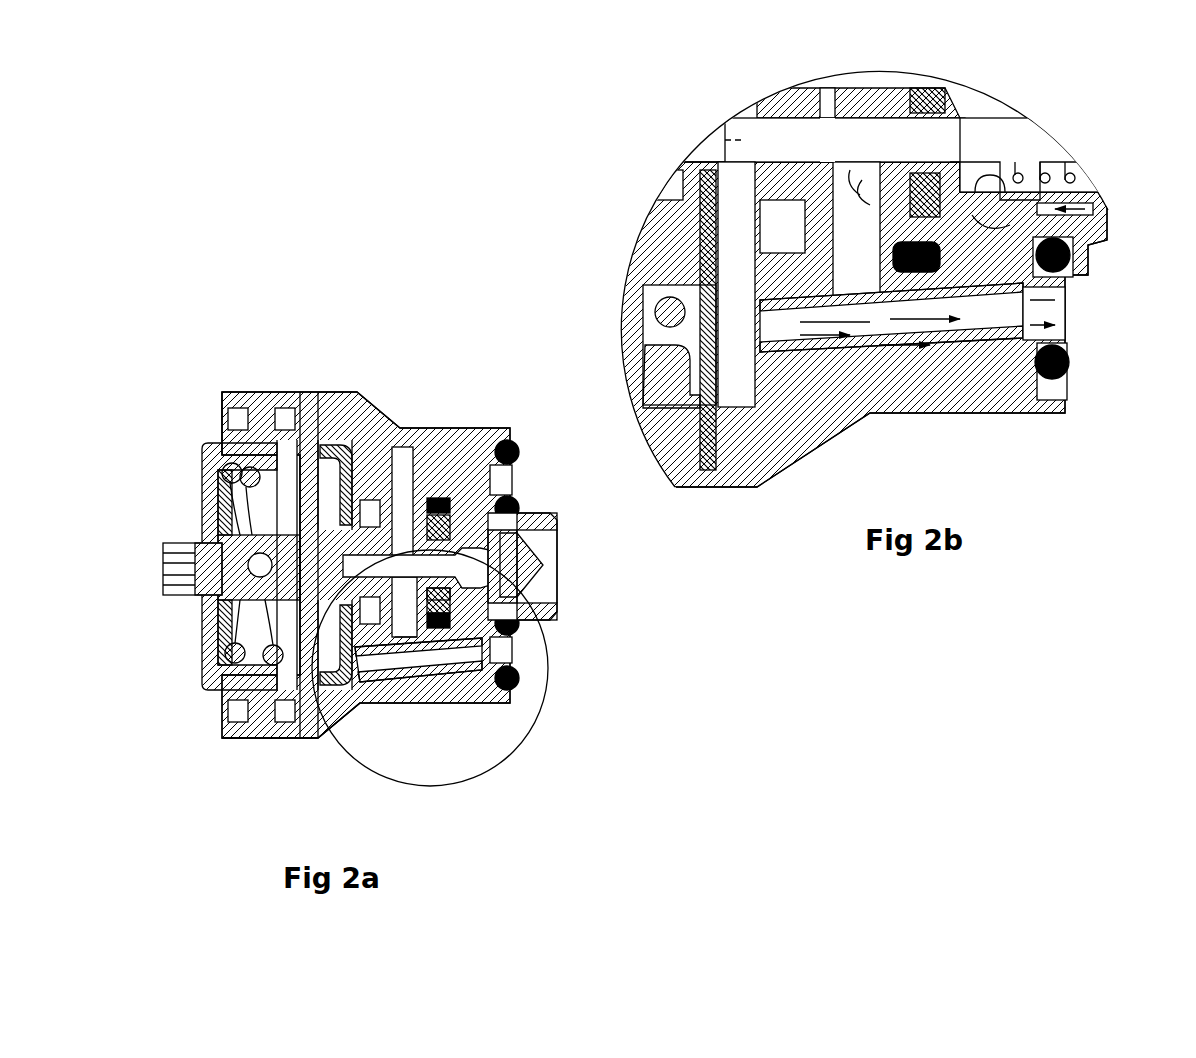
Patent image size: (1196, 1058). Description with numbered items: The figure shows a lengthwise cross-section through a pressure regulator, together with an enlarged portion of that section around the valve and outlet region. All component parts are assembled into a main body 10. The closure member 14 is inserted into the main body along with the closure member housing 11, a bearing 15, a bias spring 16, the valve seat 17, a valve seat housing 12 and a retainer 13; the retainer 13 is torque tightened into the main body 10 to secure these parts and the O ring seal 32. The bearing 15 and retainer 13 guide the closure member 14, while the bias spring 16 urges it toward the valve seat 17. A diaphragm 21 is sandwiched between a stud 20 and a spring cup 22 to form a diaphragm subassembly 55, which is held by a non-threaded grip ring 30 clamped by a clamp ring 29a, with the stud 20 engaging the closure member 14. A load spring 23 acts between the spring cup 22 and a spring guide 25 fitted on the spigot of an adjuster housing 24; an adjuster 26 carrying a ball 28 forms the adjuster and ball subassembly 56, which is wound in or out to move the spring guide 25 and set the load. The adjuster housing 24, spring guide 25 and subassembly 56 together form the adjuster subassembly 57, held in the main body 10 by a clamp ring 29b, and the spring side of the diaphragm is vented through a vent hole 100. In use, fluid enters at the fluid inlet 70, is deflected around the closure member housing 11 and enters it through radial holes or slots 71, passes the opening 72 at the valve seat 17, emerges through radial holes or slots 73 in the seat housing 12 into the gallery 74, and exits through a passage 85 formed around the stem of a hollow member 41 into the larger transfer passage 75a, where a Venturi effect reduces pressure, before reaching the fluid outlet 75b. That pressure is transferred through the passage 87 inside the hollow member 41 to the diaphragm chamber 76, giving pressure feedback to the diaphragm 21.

In FIG. 2a, the main body 10 is at (362, 432).
In FIG. 2a, the closure member housing 11 is at (542, 592).
In FIG. 2b, the closure member housing 11 is at (1087, 187).
In FIG. 2a, the valve seat housing 12 is at (423, 500).
In FIG. 2a, the retainer 13 is at (375, 490).
In FIG. 2a, the closure member 14 is at (532, 558).
In FIG. 2a, the bearing 15 is at (550, 517).
In FIG. 2a, the bias spring 16 is at (500, 535).
In FIG. 2a, the valve seat 17 is at (447, 602).
In FIG. 2b, the valve seat 17 is at (945, 88).
In FIG. 2a, the stud 20 is at (345, 430).
In FIG. 2a, the diaphragm 21 is at (316, 430).
In FIG. 2a, the spring cup 22 is at (291, 430).
In FIG. 2a, the load spring 23 is at (250, 468).
In FIG. 2a, the adjuster housing 24 is at (205, 477).
In FIG. 2a, the spring guide 25 is at (217, 512).
In FIG. 2a, the adjuster 26 is at (167, 583).
In FIG. 2a, the ball 28 is at (246, 578).
In FIG. 2a, the clamp ring 29a is at (272, 740).
In FIG. 2a, the clamp ring 29b is at (222, 740).
In FIG. 2a, the grip ring 30 is at (315, 740).
In FIG. 2a, the O ring seal 32 is at (440, 495).
In FIG. 2a, the hollow member 41 is at (440, 688).
In FIG. 2a, the diaphragm subassembly 55 is at (222, 282).
In FIG. 2a, the adjuster and ball subassembly 56 is at (107, 597).
In FIG. 2a, the adjuster subassembly 57 is at (75, 455).
In FIG. 2a, the fluid inlet 70 is at (552, 572).
In FIG. 2b, the radial holes or slots 71 is at (972, 215).
In FIG. 2b, the opening 72 is at (933, 175).
In FIG. 2b, the radial holes or slots 73 is at (853, 217).
In FIG. 2b, the gallery 74 is at (850, 275).
In FIG. 2b, the transfer passage 75a is at (1008, 313).
In FIG. 2a, the fluid outlet 75b is at (506, 650).
In FIG. 2b, the fluid outlet 75b is at (1058, 313).
In FIG. 2a, the diaphragm chamber 76 is at (347, 685).
In FIG. 2b, the diaphragm chamber 76 is at (735, 380).
In FIG. 2b, the passage 85 is at (895, 352).
In FIG. 2b, the passage 87 is at (878, 330).
In FIG. 2a, the vent hole 100 is at (232, 447).